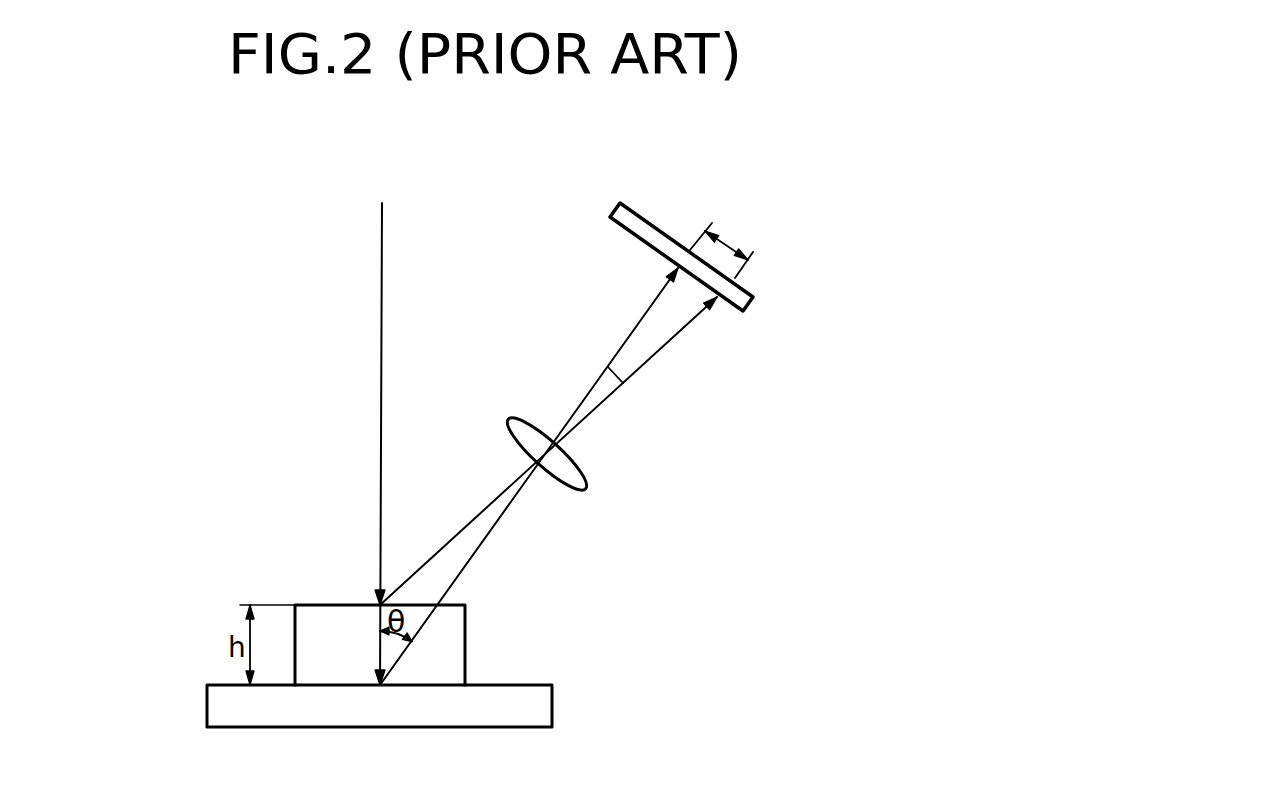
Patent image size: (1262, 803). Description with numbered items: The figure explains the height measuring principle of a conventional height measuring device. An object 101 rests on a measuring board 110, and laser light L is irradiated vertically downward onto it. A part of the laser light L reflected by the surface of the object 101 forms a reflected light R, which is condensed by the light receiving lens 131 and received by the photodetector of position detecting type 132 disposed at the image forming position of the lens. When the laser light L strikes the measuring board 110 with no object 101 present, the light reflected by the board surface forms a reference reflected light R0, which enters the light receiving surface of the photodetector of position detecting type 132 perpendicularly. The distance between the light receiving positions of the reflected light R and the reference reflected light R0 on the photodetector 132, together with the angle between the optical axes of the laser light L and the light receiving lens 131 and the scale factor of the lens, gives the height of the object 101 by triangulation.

The object 101 is at (330, 603).
The measuring board 110 is at (512, 686).
The light receiving lens 131 is at (568, 480).
The photodetector of position detecting type 132 is at (750, 303).
The laser light L is at (380, 252).
The reflected light R is at (650, 360).
The reference reflected light R0 is at (623, 383).